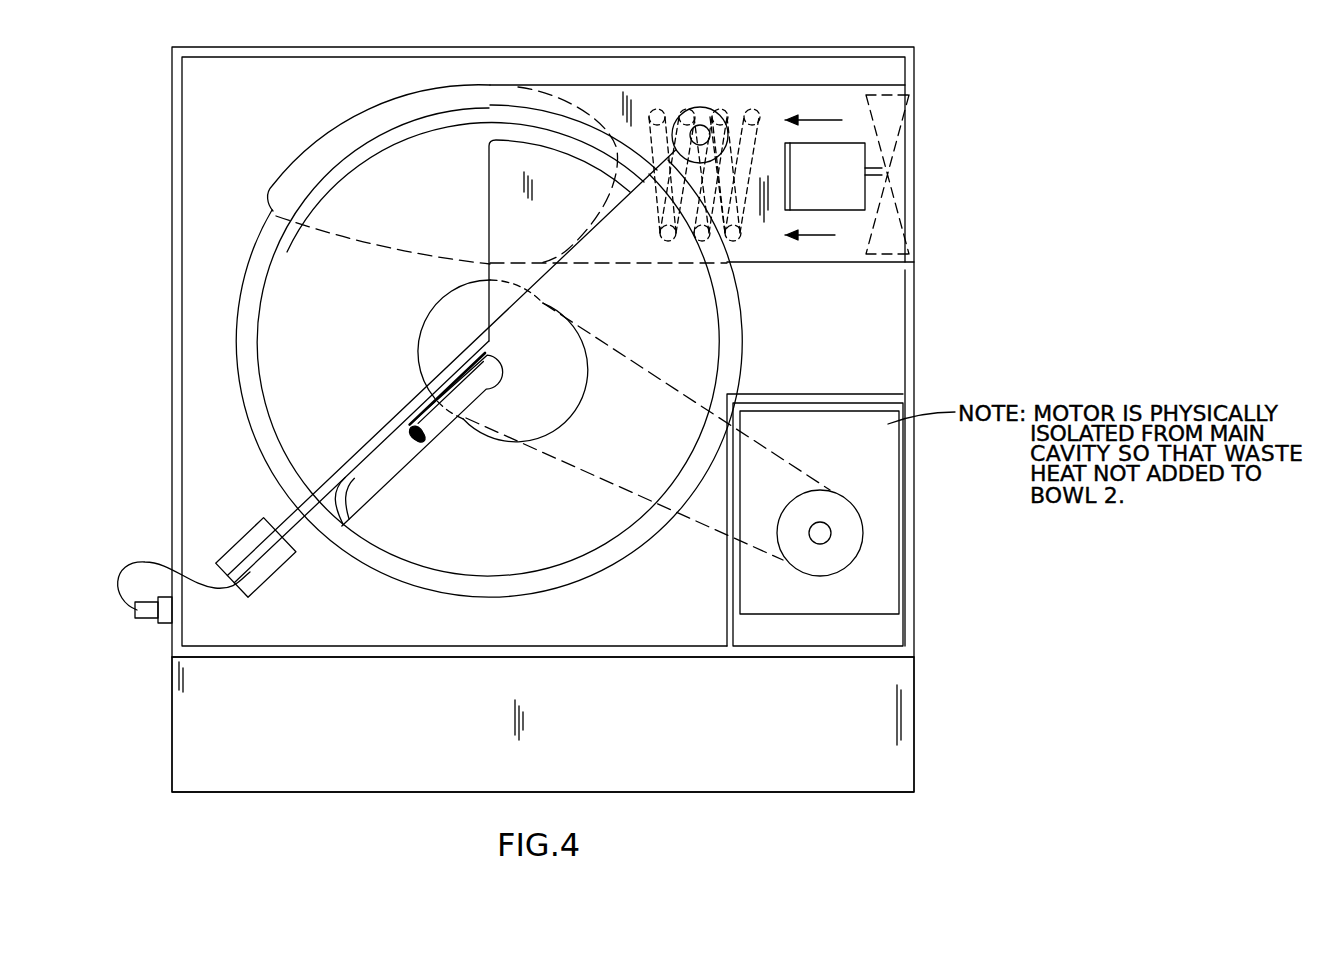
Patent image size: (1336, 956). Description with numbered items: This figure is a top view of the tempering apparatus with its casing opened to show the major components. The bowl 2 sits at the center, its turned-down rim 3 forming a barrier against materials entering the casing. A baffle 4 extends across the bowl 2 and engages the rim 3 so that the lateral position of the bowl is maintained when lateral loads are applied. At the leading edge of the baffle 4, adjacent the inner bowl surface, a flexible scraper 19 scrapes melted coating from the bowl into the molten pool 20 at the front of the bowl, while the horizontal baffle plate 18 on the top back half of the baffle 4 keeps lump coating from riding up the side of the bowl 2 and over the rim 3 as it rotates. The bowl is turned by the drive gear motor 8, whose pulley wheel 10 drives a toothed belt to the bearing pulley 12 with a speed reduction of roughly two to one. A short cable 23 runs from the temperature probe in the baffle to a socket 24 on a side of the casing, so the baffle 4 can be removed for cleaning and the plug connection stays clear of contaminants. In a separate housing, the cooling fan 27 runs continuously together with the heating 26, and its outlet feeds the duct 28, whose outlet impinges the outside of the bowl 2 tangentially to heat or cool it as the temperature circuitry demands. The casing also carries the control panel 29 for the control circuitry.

The bowl assembly 2 is at (712, 363).
The rim 3 is at (733, 314).
The baffle 4 is at (540, 297).
The drive gear motor 8 is at (890, 576).
The pulley wheel 10 is at (860, 520).
The pulley 12 is at (523, 405).
The horizontal baffle plate 18 is at (500, 212).
The flexible scraper 19 is at (380, 500).
The molten pool 20 is at (430, 447).
The short cable 23 is at (145, 562).
The socket 24 is at (165, 625).
The heating 26 is at (730, 117).
The cooling fan 27 is at (866, 159).
The duct 28 is at (603, 92).
The control panel 29 is at (190, 745).